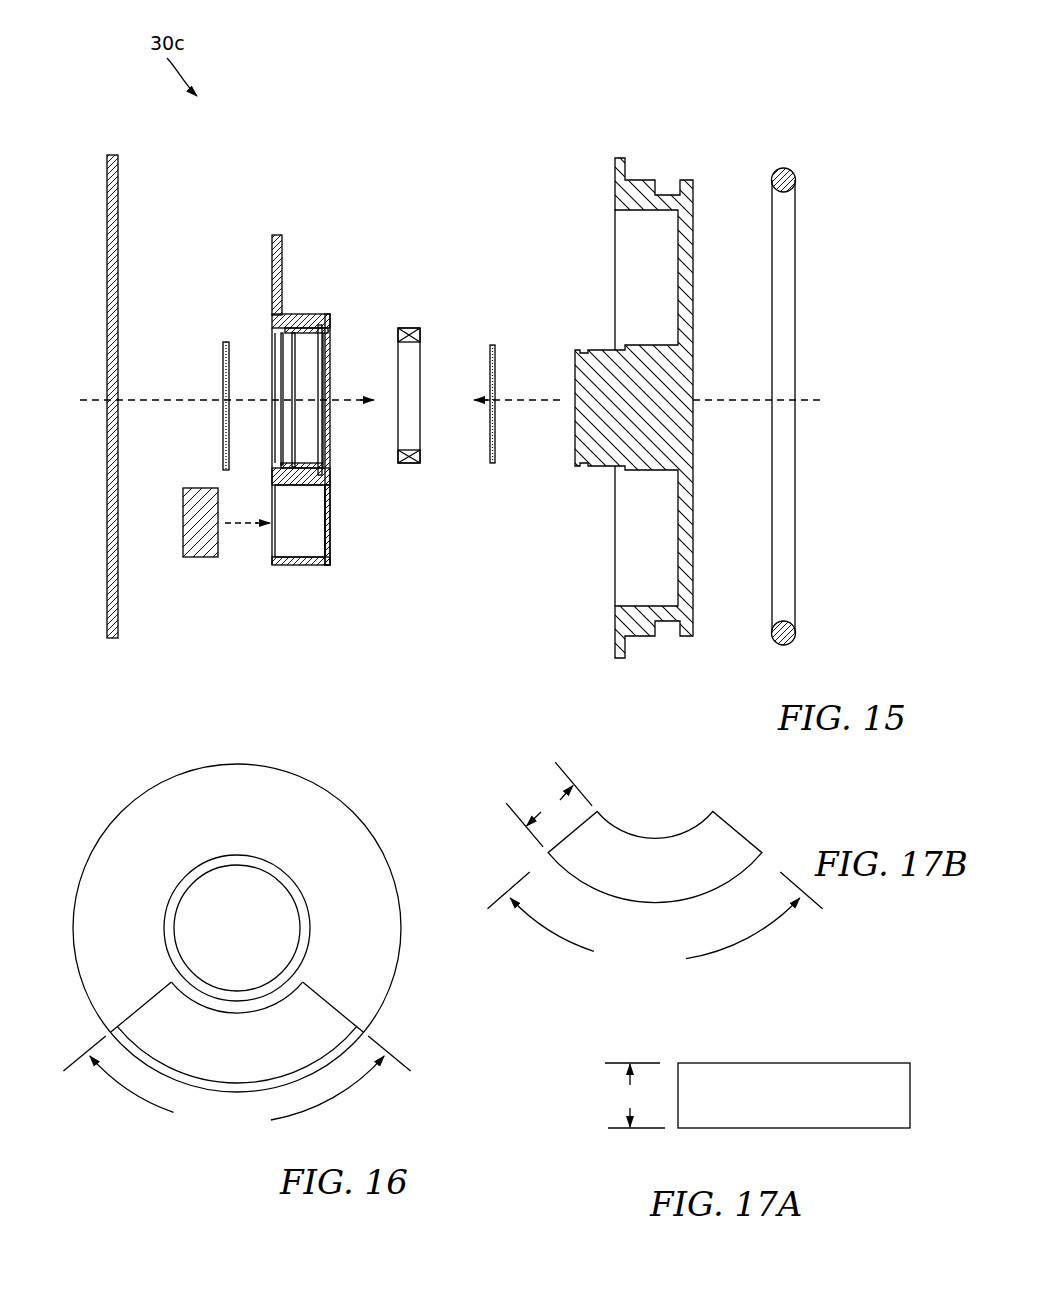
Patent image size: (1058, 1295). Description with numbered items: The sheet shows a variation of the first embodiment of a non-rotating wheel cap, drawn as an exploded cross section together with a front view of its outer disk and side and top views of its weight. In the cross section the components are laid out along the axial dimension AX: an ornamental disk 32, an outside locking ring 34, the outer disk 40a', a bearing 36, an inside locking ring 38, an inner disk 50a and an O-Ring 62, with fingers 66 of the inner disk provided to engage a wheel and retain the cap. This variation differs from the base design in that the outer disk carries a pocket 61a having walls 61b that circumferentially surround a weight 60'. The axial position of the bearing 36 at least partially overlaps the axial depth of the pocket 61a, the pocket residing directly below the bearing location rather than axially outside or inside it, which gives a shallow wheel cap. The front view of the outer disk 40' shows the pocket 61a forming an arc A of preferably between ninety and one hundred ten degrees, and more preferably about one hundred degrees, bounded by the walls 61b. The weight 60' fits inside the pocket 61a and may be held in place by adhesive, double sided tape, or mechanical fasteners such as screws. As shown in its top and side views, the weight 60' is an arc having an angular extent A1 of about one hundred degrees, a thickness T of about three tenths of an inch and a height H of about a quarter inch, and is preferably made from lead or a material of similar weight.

In FIG. 15, the ornamental disk 32 is at (107, 357).
In FIG. 15, the outside locking ring 34 is at (222, 350).
In FIG. 15, the bearing 36 is at (398, 328).
In FIG. 15, the inside locking ring 38 is at (490, 345).
In FIG. 15, the outer disk 40a' is at (266, 381).
In FIG. 16, the outer disk 40' is at (222, 928).
In FIG. 15, the inner disk 50a is at (574, 260).
In FIG. 15, the weight 60' is at (226, 548).
In FIG. 17B, the weight 60' is at (655, 820).
In FIG. 17A, the weight 60' is at (794, 1065).
In FIG. 15, the pocket 61a is at (283, 535).
In FIG. 16, the pocket 61a is at (237, 1024).
In FIG. 15, the walls 61b is at (308, 553).
In FIG. 16, the walls 61b is at (318, 998).
In FIG. 15, the O-Ring 62 is at (783, 292).
In FIG. 15, the fingers 66 is at (732, 675).
In FIG. 15, the axial dimension AX is at (350, 405).
In FIG. 16, the arc A is at (236, 1087).
In FIG. 17B, the angular extent A1 is at (655, 925).
In FIG. 17B, the thickness T is at (549, 804).
In FIG. 17A, the height H is at (635, 1095).